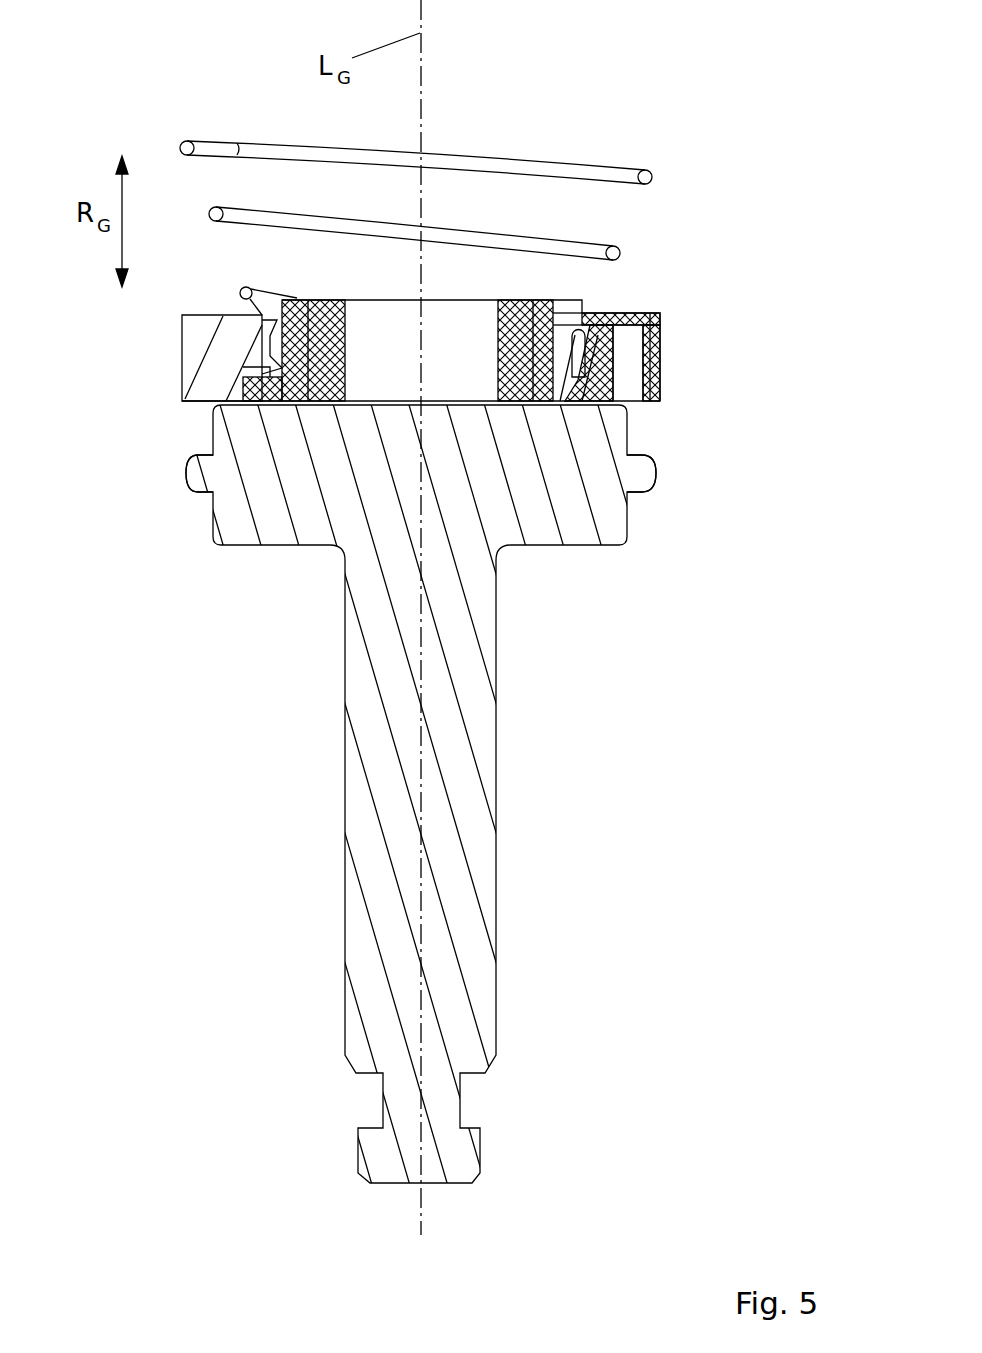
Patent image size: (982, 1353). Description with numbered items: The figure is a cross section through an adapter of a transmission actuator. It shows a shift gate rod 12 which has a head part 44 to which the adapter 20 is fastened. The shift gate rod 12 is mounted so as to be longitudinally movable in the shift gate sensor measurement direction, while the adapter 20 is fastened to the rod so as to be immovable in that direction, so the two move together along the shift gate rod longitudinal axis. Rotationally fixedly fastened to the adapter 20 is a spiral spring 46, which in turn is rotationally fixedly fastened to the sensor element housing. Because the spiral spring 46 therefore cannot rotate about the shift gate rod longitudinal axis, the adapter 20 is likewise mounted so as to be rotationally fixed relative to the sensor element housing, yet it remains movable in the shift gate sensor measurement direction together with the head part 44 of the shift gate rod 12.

The shift gate rod 12 is at (473, 865).
The adapter 20 is at (656, 313).
The head part 44 is at (645, 470).
The spiral spring 46 is at (513, 160).